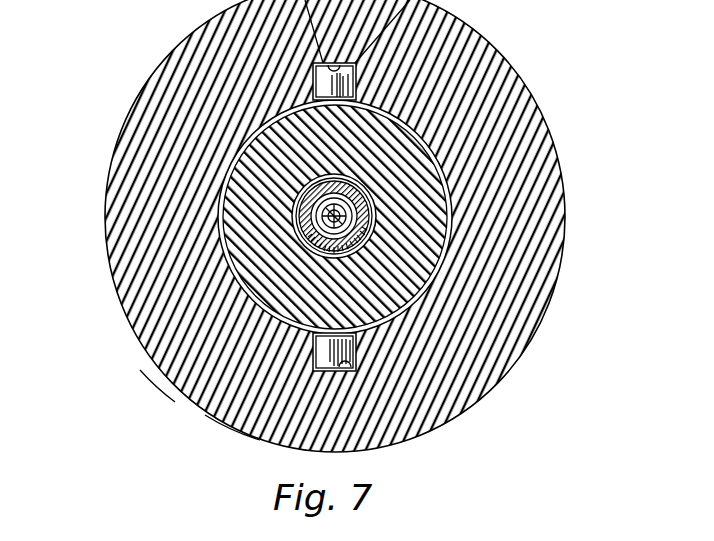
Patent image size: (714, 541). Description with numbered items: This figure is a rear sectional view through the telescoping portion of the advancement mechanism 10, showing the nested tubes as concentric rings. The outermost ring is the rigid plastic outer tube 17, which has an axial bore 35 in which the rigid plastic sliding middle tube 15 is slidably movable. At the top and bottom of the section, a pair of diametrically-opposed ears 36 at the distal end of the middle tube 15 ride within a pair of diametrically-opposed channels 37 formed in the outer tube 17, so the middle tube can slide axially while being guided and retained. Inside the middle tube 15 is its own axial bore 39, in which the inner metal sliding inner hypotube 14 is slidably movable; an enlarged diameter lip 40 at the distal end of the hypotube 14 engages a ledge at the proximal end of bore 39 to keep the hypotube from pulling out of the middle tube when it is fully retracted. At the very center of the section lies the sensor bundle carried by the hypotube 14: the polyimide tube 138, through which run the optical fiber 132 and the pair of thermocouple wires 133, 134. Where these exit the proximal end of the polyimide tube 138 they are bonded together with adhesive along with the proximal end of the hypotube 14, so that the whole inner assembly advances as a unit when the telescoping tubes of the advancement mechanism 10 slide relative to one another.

The advancement mechanism 10 is at (553, 90).
The sliding inner hypotube 14 is at (290, 265).
The sliding middle tube 15 is at (425, 292).
The outer tube 17 is at (462, 102).
The axial bore 35 is at (433, 272).
The ears 36 is at (326, 372).
The channels 37 is at (345, 363).
The axial bore 39 is at (233, 393).
The enlarged diameter lip 40 is at (165, 371).
The optical fiber 132 is at (345, 190).
The thermocouple wire 133 is at (322, 227).
The thermocouple wire 134 is at (330, 232).
The polyimide tube 138 is at (325, 243).